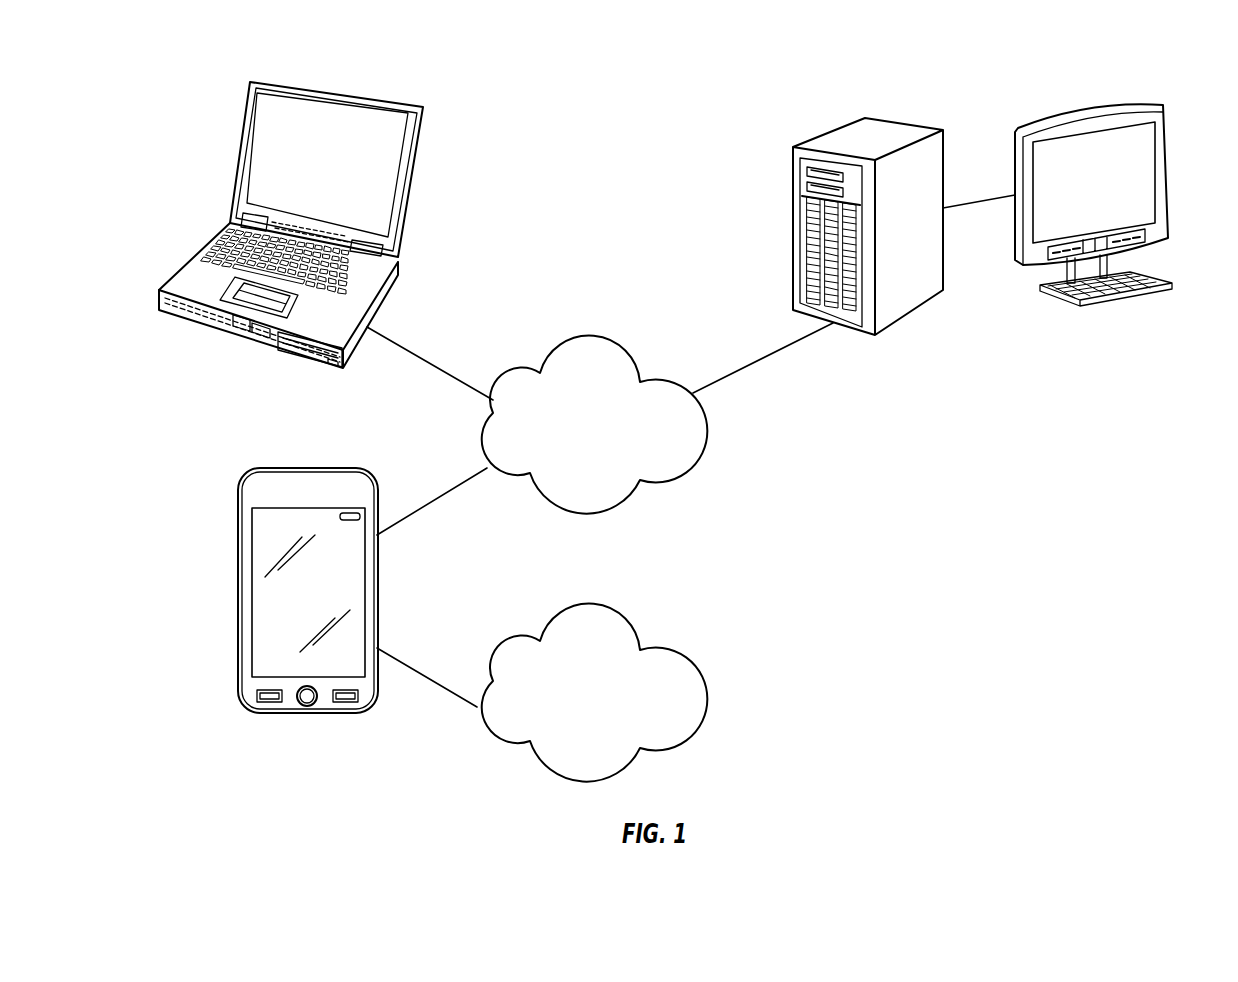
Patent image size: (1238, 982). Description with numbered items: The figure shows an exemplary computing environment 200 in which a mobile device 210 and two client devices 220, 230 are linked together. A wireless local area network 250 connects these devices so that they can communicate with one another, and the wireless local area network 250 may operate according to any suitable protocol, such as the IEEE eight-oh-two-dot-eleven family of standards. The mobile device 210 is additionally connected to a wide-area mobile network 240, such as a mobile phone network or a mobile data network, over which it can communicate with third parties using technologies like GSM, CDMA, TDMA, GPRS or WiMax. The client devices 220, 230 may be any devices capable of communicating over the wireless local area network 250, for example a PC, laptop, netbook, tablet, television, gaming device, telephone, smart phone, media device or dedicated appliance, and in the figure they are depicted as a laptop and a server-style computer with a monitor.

The computing environment 200 is at (532, 92).
The mobile device 210 is at (239, 592).
The client device 220 is at (239, 156).
The client device 230 is at (793, 229).
The wide-area mobile network 240 is at (707, 697).
The wireless local area network (WLAN) 250 is at (590, 335).